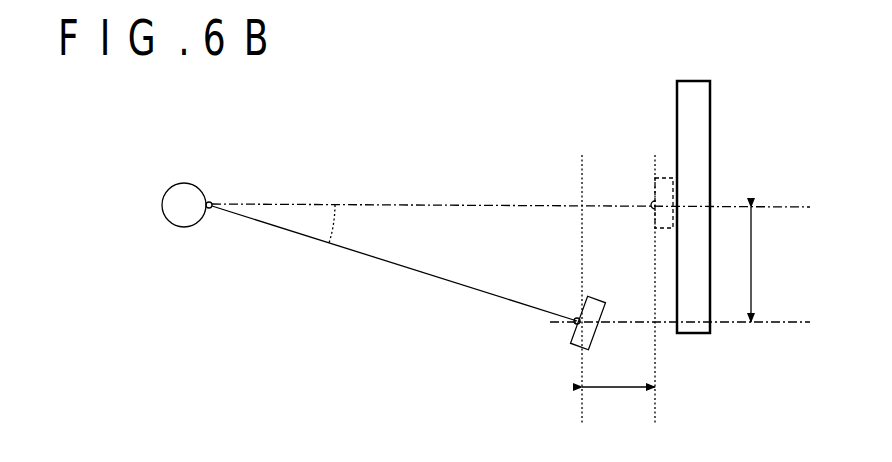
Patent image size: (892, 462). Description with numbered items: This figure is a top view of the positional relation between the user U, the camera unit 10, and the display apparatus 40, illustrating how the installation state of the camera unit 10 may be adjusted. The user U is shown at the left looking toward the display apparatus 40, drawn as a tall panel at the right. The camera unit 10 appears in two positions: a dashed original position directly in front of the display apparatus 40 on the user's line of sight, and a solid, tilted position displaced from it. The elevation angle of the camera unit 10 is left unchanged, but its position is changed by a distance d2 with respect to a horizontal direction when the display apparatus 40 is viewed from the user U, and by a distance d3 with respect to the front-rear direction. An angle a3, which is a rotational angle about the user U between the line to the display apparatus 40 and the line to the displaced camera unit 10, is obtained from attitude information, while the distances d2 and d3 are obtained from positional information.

The camera unit 10 is at (610, 286).
The display apparatus 40 is at (711, 190).
The user U is at (164, 191).
The angle a3 is at (363, 252).
The distance d2 is at (768, 264).
The distance d3 is at (618, 403).